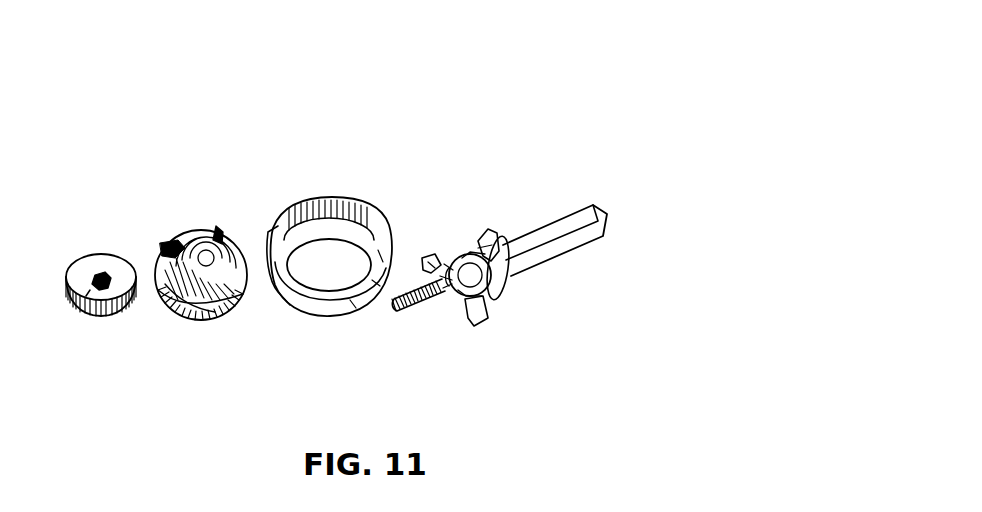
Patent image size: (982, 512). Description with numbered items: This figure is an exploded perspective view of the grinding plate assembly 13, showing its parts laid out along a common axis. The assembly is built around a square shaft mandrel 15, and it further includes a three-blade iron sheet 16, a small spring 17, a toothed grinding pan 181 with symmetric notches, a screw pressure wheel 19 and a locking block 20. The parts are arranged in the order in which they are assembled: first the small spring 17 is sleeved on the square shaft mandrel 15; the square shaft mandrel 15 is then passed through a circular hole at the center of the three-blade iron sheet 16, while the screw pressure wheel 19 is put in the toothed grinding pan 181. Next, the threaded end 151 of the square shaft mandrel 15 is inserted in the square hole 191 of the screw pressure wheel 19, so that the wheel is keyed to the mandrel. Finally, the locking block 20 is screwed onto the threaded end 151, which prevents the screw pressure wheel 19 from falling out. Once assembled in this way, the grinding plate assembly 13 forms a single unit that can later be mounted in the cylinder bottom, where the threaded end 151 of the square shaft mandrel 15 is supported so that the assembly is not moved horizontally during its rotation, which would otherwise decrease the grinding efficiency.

The grinding plate assembly 13 is at (512, 79).
The square shaft mandrel 15 is at (580, 238).
The threaded end 151 is at (413, 310).
The three-blade iron sheet 16 is at (440, 268).
The small spring 17 is at (443, 293).
The toothed grinding pan with symmetric notches 181 is at (340, 198).
The screw pressure wheel 19 is at (175, 292).
The square hole 191 is at (170, 303).
The locking block 20 is at (108, 255).